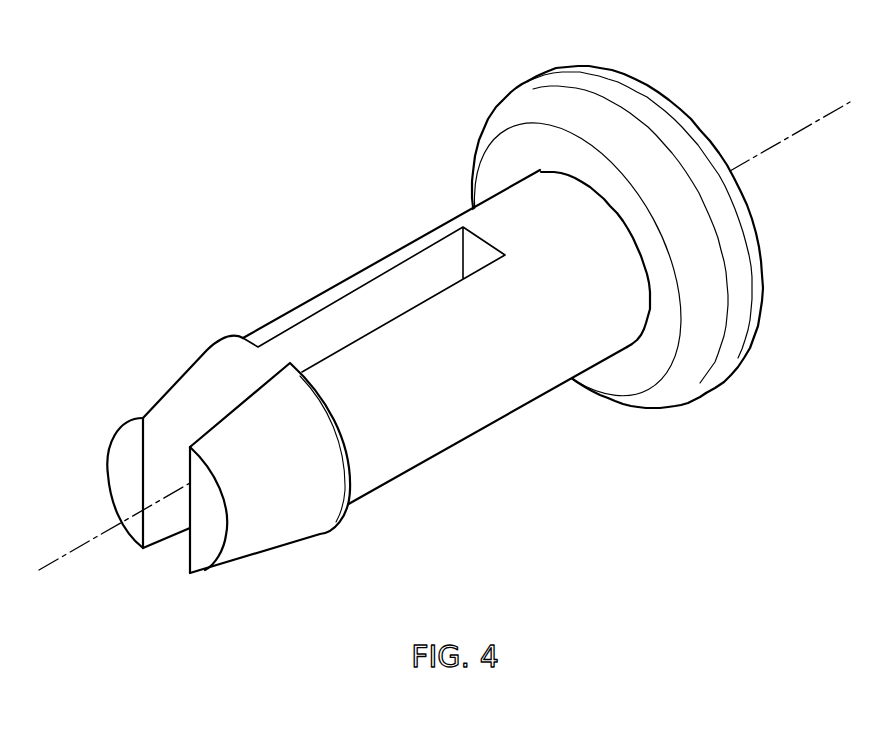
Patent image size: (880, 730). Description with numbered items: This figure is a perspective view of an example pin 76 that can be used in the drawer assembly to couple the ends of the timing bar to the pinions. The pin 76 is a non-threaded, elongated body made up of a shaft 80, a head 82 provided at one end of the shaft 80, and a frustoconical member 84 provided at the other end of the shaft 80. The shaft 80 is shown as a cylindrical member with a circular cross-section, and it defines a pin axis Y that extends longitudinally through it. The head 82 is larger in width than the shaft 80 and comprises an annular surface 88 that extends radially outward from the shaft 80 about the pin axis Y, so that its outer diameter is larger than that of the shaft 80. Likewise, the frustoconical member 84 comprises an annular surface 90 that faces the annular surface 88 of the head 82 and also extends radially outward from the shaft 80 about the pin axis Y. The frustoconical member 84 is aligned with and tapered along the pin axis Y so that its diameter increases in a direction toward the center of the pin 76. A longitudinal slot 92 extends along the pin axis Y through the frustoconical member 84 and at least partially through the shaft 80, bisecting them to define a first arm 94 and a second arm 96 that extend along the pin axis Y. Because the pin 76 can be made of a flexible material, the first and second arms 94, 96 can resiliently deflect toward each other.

The pin 76 is at (619, 70).
The head 82 is at (766, 304).
The annular surface 88 is at (509, 164).
The shaft 80 is at (524, 405).
The longitudinal slot 92 is at (348, 323).
The frustoconical member 84 is at (317, 538).
The annular surface 90 is at (353, 484).
The second arm 96 is at (266, 553).
The first arm 94 is at (170, 388).
The pin axis Y is at (831, 113).